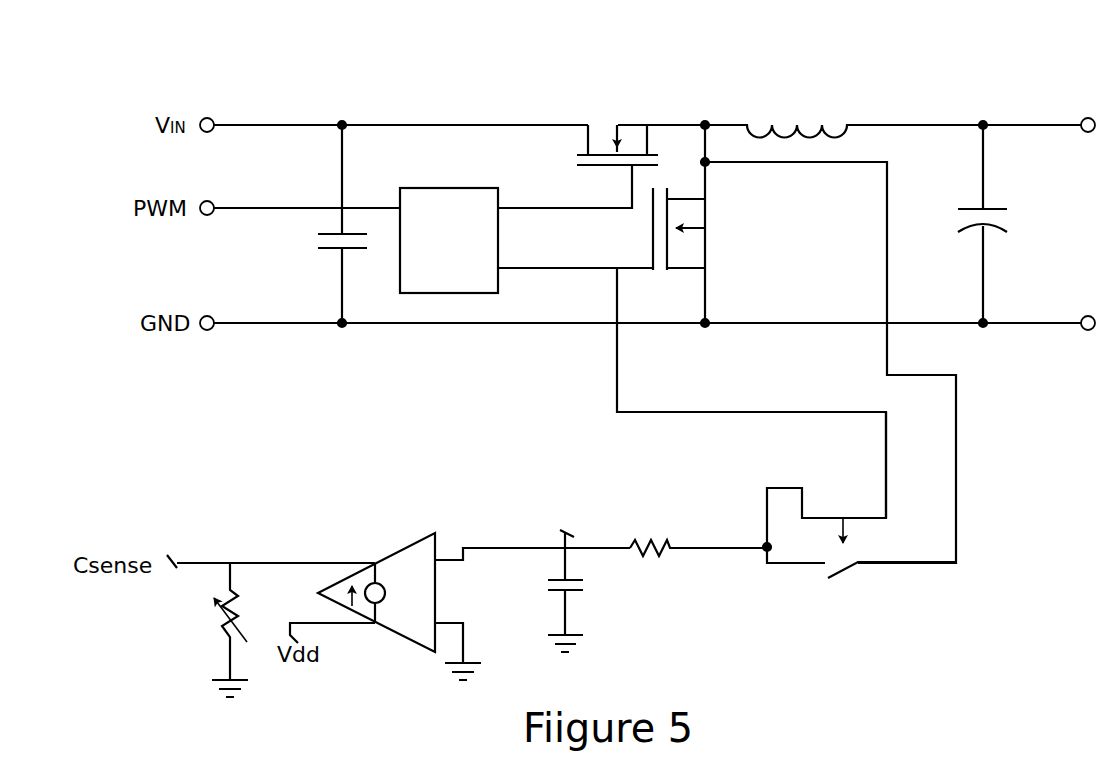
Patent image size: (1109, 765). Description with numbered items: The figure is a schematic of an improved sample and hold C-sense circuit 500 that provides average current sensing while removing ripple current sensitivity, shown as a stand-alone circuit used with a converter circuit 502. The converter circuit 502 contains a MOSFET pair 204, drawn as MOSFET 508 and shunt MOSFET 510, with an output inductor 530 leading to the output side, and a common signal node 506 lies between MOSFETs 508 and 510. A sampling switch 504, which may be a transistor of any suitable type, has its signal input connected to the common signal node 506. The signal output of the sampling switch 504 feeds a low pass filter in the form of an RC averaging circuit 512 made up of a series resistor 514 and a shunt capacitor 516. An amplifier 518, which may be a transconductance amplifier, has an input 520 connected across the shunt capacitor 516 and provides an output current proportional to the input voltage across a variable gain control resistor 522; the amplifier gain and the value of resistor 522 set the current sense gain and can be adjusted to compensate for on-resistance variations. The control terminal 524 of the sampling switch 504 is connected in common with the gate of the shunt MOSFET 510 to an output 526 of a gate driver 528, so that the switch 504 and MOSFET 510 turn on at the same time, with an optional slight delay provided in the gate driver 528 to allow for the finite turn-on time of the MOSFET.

The converter circuit 502 is at (515, 117).
The MOSFET 508 is at (608, 117).
The MOSFET pair 204 is at (583, 155).
The output inductor 530 is at (798, 108).
The common signal node 506 is at (707, 163).
The shunt MOSFET 510 is at (667, 257).
The gate driver 528 is at (437, 297).
The output 526 is at (568, 272).
The C-sense circuit 500 is at (399, 579).
The amplifier 518 is at (392, 630).
The input 520 is at (450, 558).
The RC averaging circuit 512 is at (631, 556).
The shunt capacitor 516 is at (548, 596).
The series resistor 514 is at (650, 553).
The control terminal 524 is at (858, 516).
The sampling switch 504 is at (845, 580).
The variable gain control resistor 522 is at (217, 593).